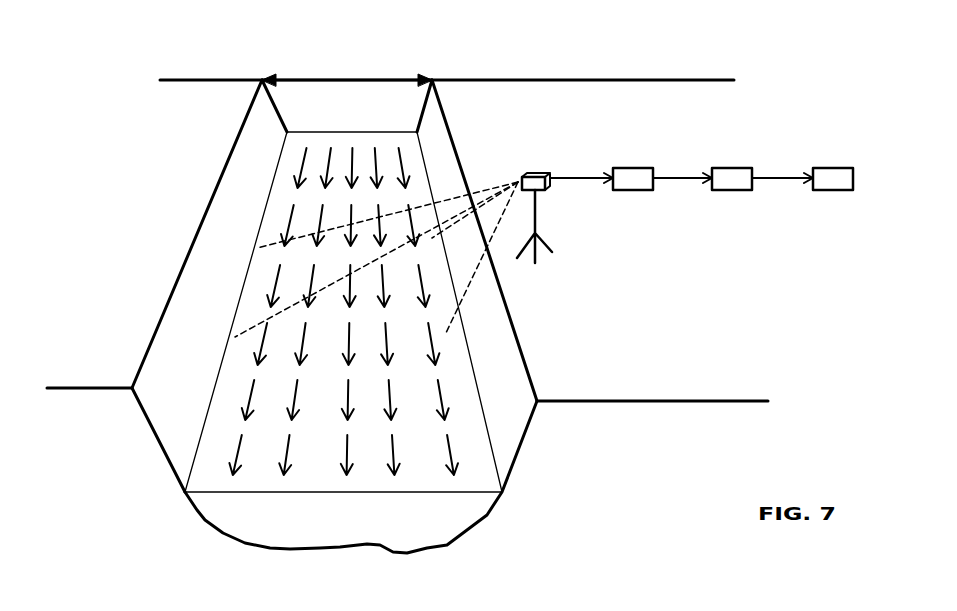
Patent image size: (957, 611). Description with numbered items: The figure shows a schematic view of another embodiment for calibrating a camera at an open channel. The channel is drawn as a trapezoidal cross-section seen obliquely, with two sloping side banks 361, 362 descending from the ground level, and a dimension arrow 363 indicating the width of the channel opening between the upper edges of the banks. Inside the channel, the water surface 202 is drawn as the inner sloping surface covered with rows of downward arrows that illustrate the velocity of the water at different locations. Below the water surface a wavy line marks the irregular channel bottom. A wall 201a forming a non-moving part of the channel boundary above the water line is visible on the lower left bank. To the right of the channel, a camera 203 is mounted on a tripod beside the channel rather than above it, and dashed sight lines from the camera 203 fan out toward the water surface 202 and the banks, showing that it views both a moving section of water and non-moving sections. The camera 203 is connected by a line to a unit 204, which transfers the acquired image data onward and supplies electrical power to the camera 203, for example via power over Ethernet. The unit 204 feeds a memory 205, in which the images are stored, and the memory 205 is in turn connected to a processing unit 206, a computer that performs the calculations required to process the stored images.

The first side slope 361 is at (220, 178).
The second side slope 362 is at (457, 148).
The opening width 363 is at (348, 78).
The wall 201a is at (167, 413).
The water surface 202 is at (215, 480).
The camera 203 is at (535, 170).
The unit 204 is at (630, 168).
The memory 205 is at (732, 167).
The processing unit 206 is at (832, 167).